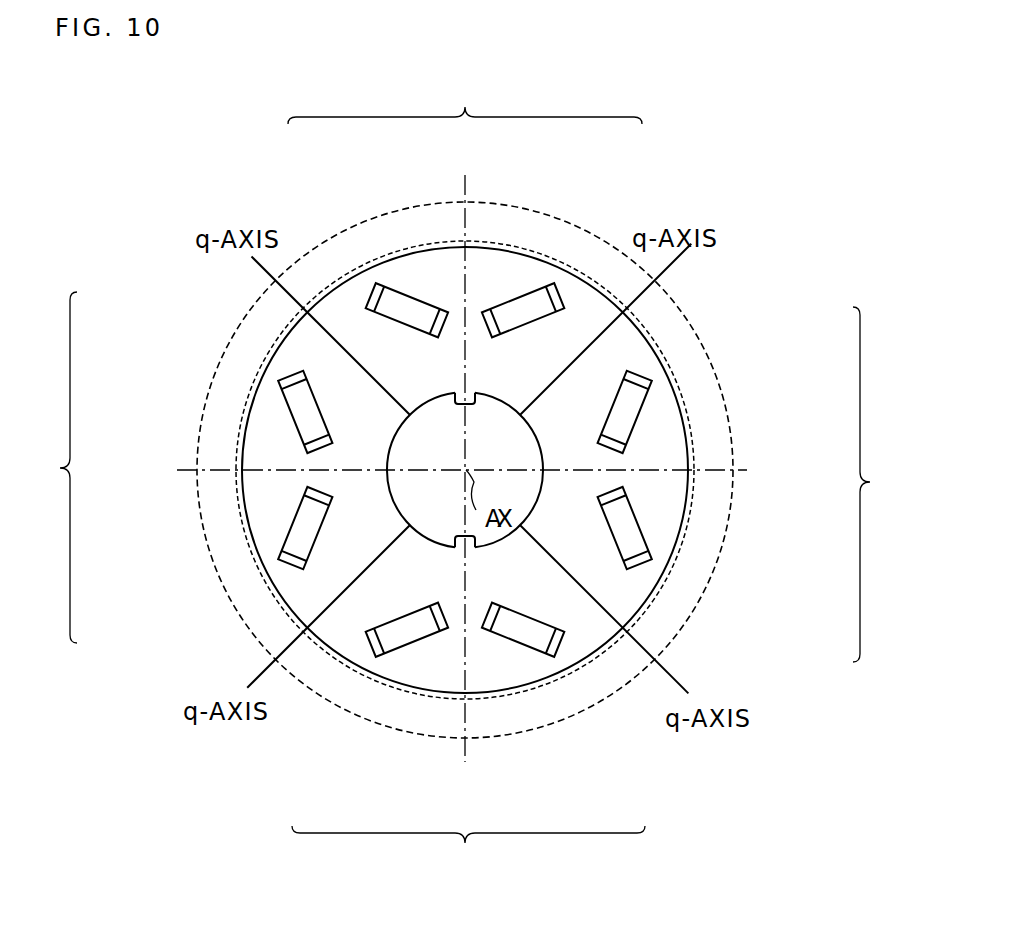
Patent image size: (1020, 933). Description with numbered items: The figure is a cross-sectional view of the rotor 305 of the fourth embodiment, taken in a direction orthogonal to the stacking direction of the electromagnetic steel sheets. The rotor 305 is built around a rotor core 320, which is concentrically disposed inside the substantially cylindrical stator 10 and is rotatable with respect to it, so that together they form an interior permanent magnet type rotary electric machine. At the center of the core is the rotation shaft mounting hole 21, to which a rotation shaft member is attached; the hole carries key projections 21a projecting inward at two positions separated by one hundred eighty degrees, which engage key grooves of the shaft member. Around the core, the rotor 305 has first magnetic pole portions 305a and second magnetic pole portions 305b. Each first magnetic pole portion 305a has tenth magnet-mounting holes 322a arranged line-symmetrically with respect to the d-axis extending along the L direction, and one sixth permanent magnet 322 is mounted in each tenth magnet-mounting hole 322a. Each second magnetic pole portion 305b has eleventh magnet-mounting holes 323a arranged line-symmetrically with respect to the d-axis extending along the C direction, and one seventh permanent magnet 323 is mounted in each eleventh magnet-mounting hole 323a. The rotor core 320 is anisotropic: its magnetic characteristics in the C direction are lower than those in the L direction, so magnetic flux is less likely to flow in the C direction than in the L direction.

The stator 10 is at (687, 313).
The rotation shaft mounting hole 21 is at (537, 492).
The key projection 21a is at (472, 393).
The rotor 305 is at (845, 782).
The first magnetic pole portion 305a is at (463, 477).
The second magnetic pole portion 305b is at (466, 474).
The rotor core 320 is at (660, 596).
The sixth permanent magnet 322 is at (632, 410).
The tenth magnet-mounting hole 322a is at (642, 392).
The seventh permanent magnet 323 is at (388, 300).
The eleventh magnet-mounting hole 323a is at (380, 292).